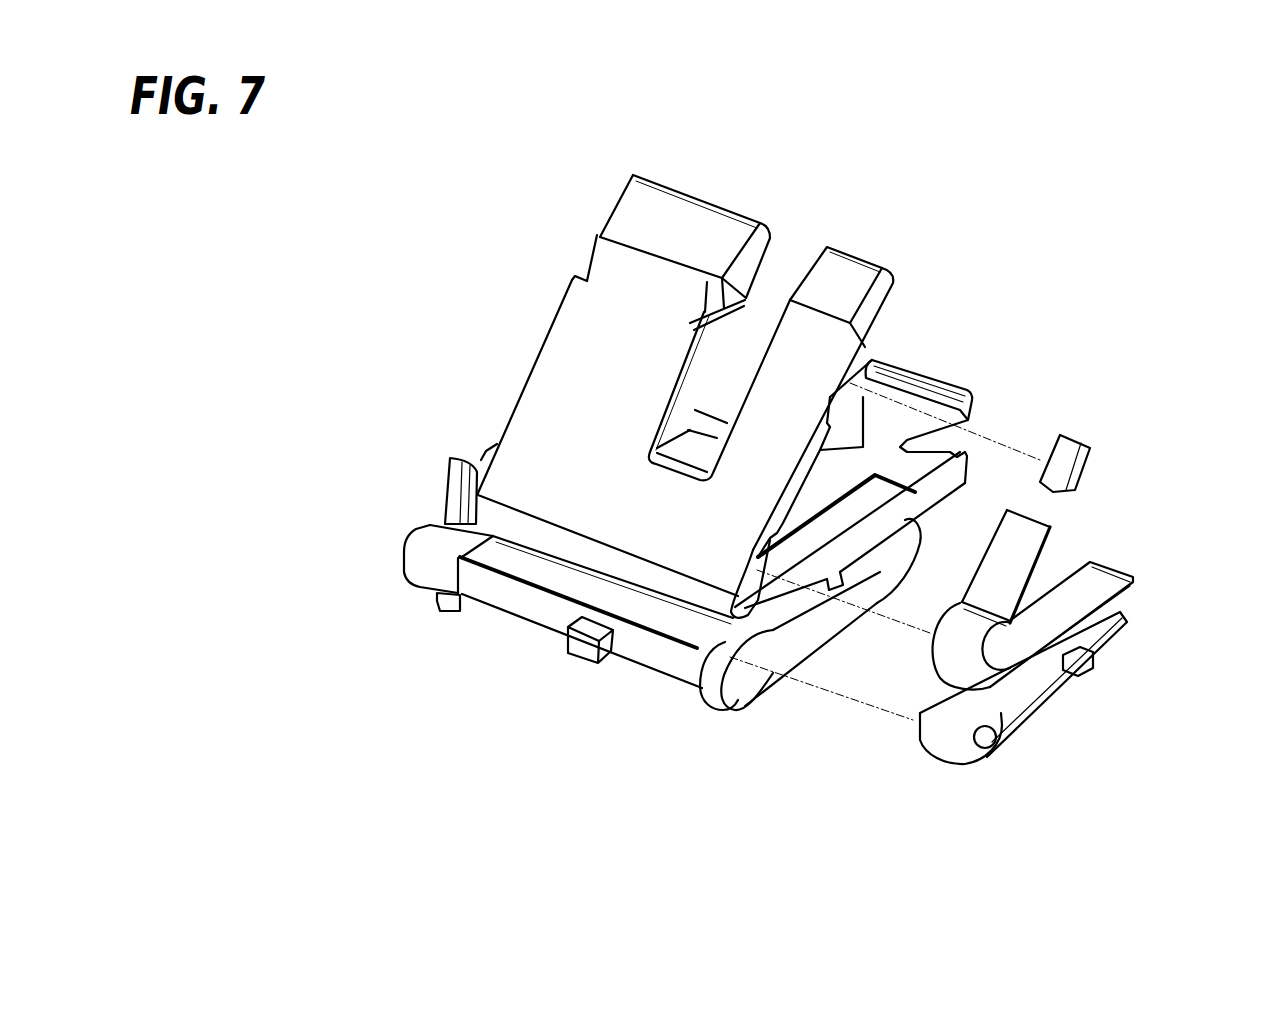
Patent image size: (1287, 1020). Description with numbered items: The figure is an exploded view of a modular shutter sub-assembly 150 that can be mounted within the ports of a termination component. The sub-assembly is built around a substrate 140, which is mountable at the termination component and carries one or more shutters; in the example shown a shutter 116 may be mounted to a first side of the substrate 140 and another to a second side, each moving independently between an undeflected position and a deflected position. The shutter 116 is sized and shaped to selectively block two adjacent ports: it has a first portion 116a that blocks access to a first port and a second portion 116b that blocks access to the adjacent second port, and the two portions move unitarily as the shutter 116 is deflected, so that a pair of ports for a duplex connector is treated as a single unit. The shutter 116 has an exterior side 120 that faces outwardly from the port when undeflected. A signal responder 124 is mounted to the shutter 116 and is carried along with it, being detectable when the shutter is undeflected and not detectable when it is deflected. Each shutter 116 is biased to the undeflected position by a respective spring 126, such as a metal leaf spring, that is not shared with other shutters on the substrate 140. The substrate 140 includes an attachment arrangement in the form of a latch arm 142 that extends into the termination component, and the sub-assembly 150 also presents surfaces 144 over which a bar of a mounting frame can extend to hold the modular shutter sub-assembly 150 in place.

The modular shutter sub-assembly 150 is at (368, 541).
The surfaces 144 is at (502, 595).
The shutter 116 is at (545, 340).
The first portion 116a is at (645, 315).
The second portion 116b is at (775, 405).
The exterior side 120 is at (578, 400).
The substrate 140 is at (938, 483).
The latch arm 142 is at (932, 376).
The signal responder 124 is at (1068, 457).
The spring 126 is at (950, 662).